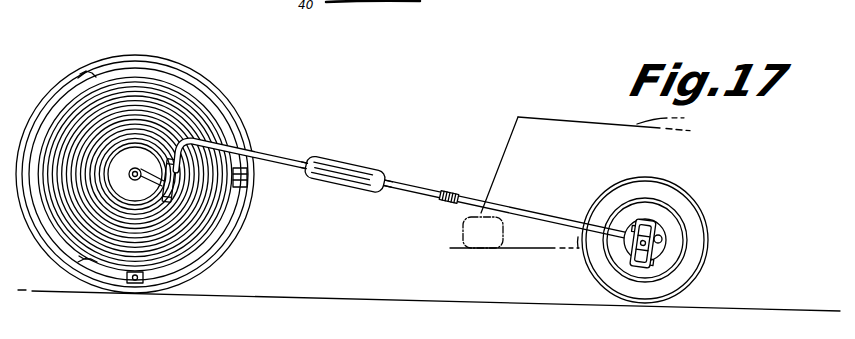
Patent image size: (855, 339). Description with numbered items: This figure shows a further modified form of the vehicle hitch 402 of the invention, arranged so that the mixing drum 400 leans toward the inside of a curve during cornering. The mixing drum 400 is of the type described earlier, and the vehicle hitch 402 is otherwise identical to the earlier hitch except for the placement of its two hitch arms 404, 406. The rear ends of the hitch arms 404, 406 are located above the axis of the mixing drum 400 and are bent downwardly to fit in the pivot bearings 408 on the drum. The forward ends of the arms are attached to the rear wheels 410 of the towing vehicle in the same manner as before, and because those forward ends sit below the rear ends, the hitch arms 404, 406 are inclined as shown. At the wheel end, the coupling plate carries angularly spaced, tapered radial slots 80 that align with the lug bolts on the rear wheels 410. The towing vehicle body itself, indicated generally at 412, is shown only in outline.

The mixing drum 400 is at (224, 82).
The vehicle hitch 402 is at (406, 189).
The hitch arm 404 is at (295, 167).
The hitch arm 406 is at (437, 199).
The pivot bearing 408 is at (178, 184).
The rear wheel 410 is at (694, 274).
The frame 412 is at (572, 131).
The radial slot 80 is at (667, 233).